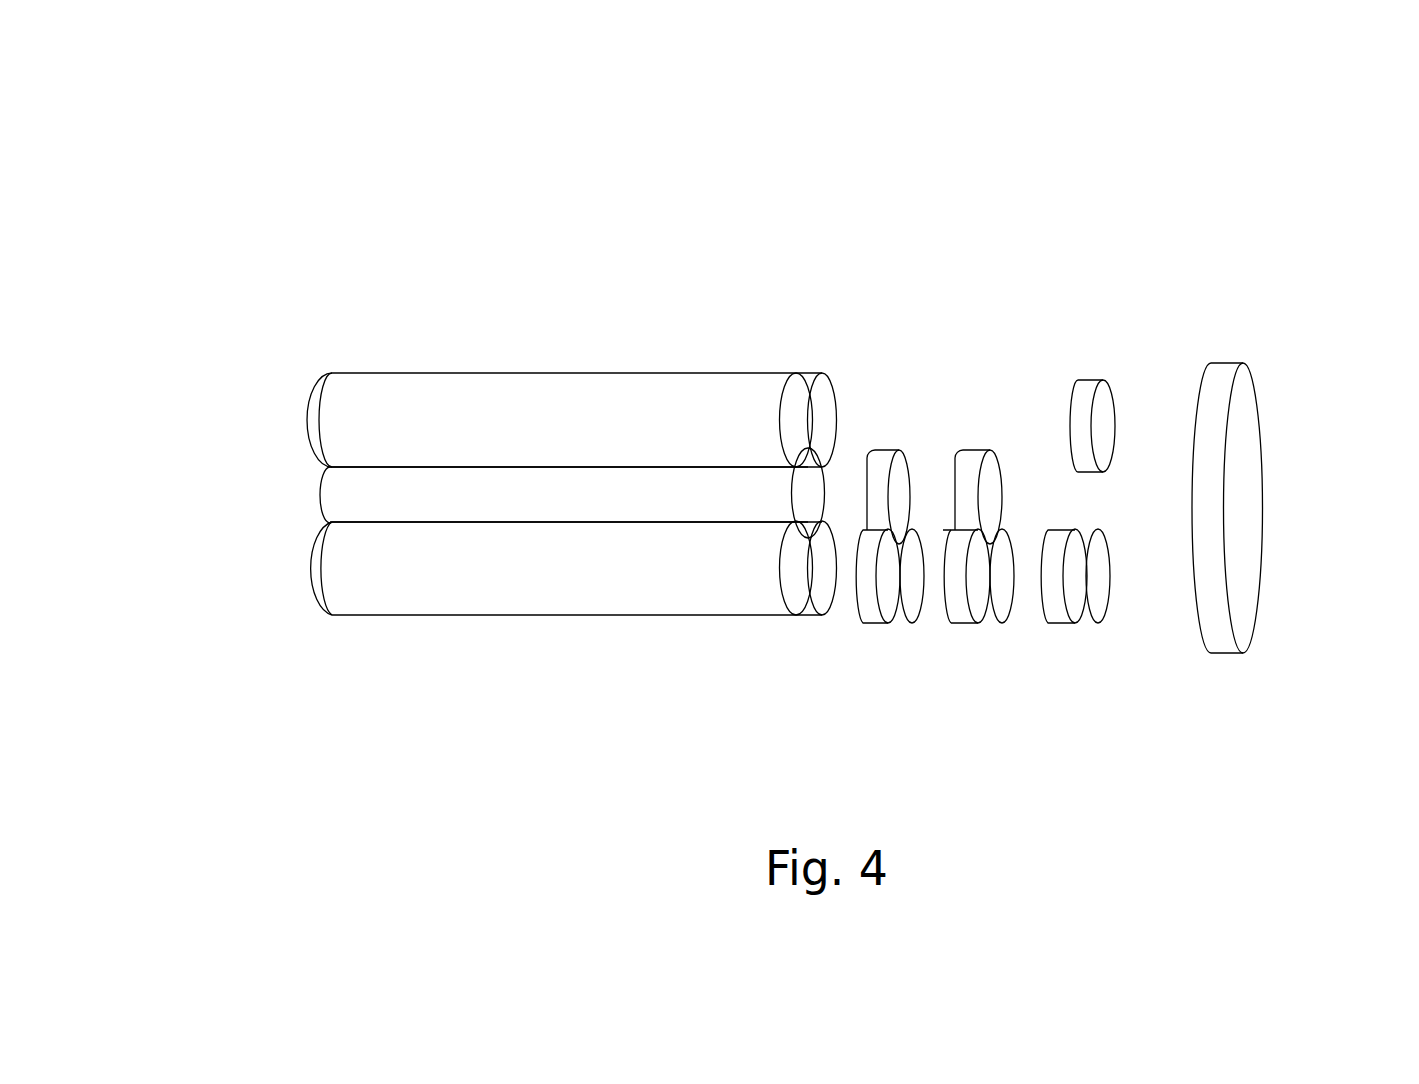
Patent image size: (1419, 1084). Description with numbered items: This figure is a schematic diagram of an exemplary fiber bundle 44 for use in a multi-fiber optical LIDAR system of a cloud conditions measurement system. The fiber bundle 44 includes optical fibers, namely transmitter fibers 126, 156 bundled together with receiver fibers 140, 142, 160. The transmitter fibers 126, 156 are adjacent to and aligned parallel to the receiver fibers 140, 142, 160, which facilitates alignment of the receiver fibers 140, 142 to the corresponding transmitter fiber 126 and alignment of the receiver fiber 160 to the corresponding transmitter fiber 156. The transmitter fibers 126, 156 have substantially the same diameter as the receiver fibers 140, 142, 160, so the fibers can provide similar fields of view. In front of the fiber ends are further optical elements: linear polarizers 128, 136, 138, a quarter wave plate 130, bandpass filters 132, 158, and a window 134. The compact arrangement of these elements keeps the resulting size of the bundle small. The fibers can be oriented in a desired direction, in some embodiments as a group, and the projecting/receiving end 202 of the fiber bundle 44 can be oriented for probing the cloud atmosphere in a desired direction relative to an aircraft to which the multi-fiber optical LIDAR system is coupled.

The fiber bundle 44 is at (576, 259).
The projecting/receiving end 202 is at (1229, 221).
The transmitter fiber 156 is at (413, 412).
The receiver fiber 160 is at (825, 414).
The transmitter fiber 126 is at (358, 492).
The receiver fiber 140 is at (391, 600).
The receiver fiber 142 is at (826, 570).
The linear polarizer 128 is at (898, 456).
The quarter wave plate 130 is at (978, 453).
The linear polarizer 136 is at (888, 637).
The linear polarizer 138 is at (913, 625).
The bandpass filter 158 is at (1103, 400).
The bandpass filter 132 is at (1085, 625).
The window 134 is at (1240, 512).